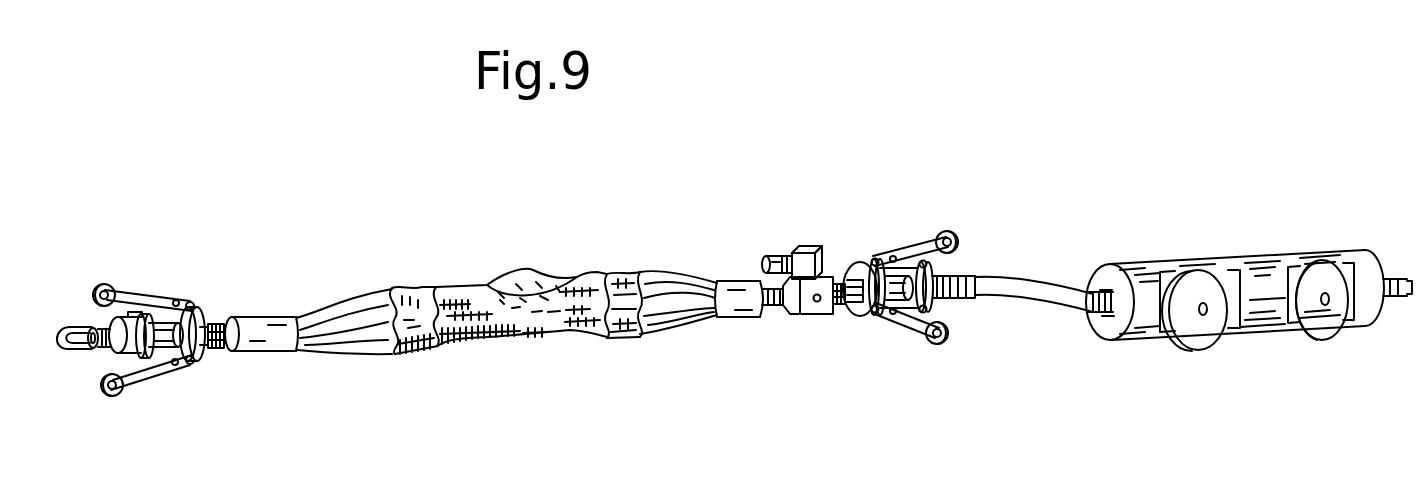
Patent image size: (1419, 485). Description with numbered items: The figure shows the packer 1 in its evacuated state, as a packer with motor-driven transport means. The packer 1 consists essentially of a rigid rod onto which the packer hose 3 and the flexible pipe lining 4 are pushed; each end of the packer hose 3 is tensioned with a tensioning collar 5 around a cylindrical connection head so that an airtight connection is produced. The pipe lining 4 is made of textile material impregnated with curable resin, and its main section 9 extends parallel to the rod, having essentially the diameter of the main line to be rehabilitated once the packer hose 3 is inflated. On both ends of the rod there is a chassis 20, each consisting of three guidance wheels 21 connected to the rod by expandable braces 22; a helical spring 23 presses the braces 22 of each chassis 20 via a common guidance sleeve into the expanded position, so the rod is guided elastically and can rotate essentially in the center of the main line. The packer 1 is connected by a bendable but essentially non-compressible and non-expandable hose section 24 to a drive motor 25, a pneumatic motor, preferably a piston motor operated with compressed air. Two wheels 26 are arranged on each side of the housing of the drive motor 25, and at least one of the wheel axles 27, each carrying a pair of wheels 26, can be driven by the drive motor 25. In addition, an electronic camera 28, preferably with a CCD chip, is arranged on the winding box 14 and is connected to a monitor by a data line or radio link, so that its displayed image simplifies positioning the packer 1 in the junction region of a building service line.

The packer 1 is at (554, 313).
The packer hose 3 is at (368, 334).
The pipe lining 4 is at (503, 323).
The tensioning collar 5 is at (262, 323).
The main section 9 is at (566, 328).
The winding box 14 is at (787, 314).
The chassis 20 is at (133, 289).
The guidance wheels 21 is at (95, 283).
The expandable braces 22 is at (171, 297).
The helical spring 23 is at (212, 345).
The hose section 24 is at (1034, 287).
The drive motor 25 is at (1255, 281).
The wheels 26 is at (1207, 340).
The wheel axles 27 is at (1201, 305).
The electronic camera 28 is at (806, 248).